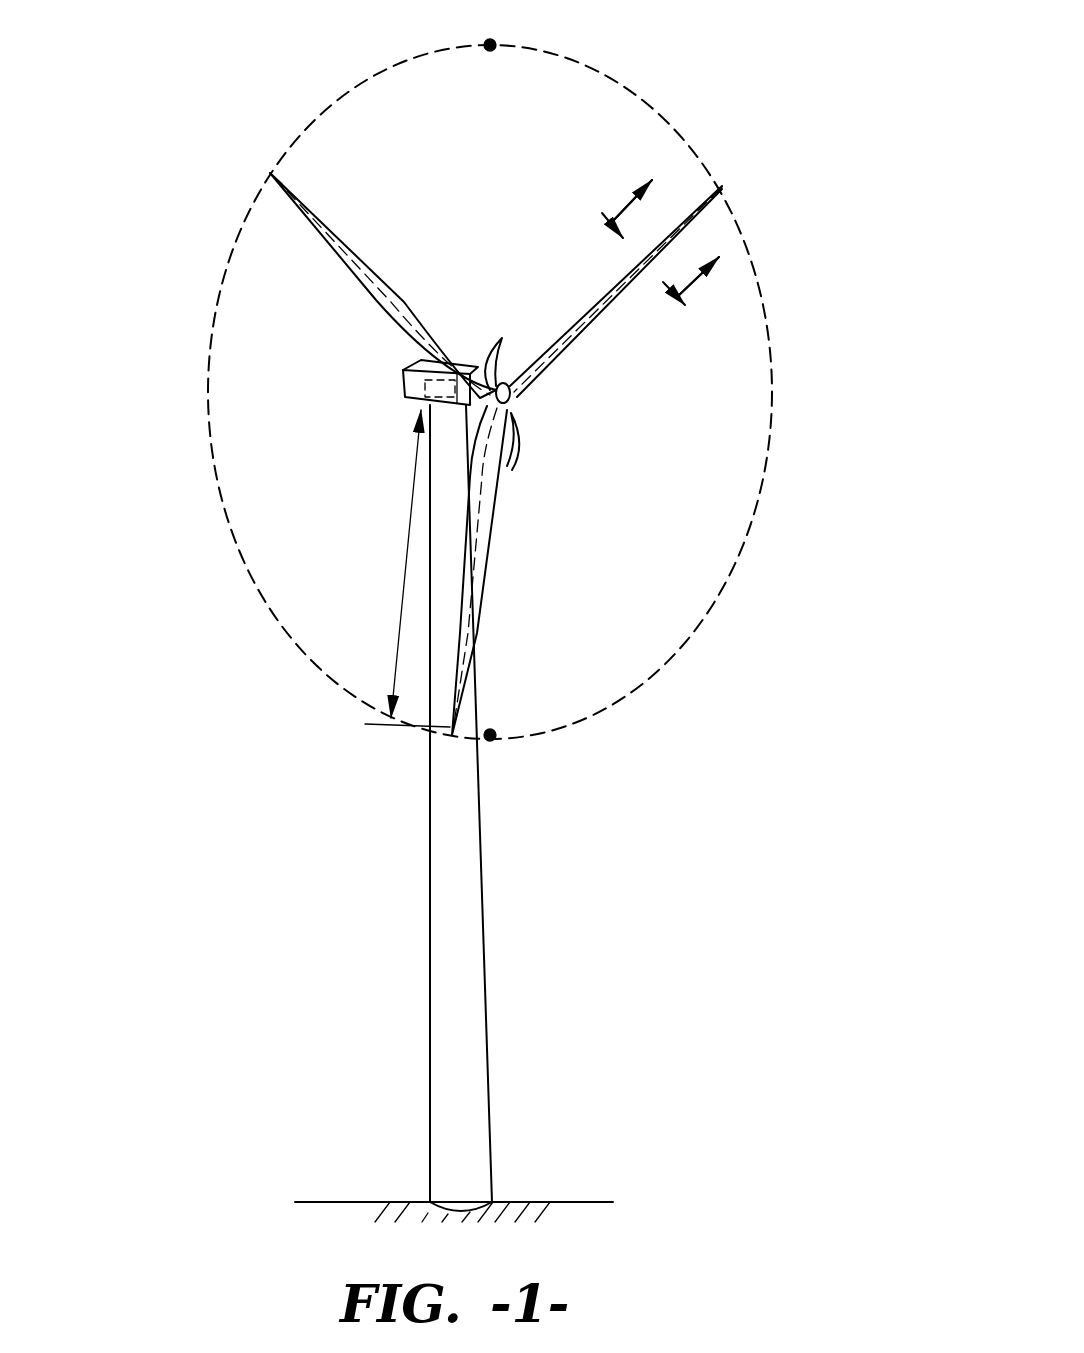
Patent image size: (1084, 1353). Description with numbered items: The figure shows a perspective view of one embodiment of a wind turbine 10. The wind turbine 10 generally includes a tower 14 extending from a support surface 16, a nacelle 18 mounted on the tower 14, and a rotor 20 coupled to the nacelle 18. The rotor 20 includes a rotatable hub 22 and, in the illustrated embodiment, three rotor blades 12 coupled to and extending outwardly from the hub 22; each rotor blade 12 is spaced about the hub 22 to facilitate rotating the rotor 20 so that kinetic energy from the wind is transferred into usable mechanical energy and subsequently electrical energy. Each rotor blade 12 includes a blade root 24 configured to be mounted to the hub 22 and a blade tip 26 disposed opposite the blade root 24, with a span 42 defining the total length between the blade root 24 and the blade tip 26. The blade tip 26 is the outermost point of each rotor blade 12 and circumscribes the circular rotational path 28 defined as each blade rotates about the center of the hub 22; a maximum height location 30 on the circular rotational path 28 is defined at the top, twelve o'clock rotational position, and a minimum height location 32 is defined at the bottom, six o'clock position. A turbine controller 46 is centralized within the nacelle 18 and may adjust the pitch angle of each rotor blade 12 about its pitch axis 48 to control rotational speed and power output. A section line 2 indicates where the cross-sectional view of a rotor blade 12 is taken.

The wind turbine 10 is at (722, 92).
The rotor blade 12 is at (522, 445).
The tower 14 is at (446, 1018).
The support surface 16 is at (540, 1202).
The nacelle 18 is at (415, 396).
The rotor 20 is at (552, 402).
The hub 22 is at (511, 396).
The blade root 24 is at (498, 358).
The blade tip 26 is at (270, 174).
The circular rotational path 28 is at (655, 680).
The maximum height location 30 is at (491, 40).
The minimum height location 32 is at (490, 730).
The span 42 is at (400, 607).
The turbine controller 46 is at (412, 400).
The pitch axis 48 is at (360, 273).
The line 2- 2 is at (672, 235).